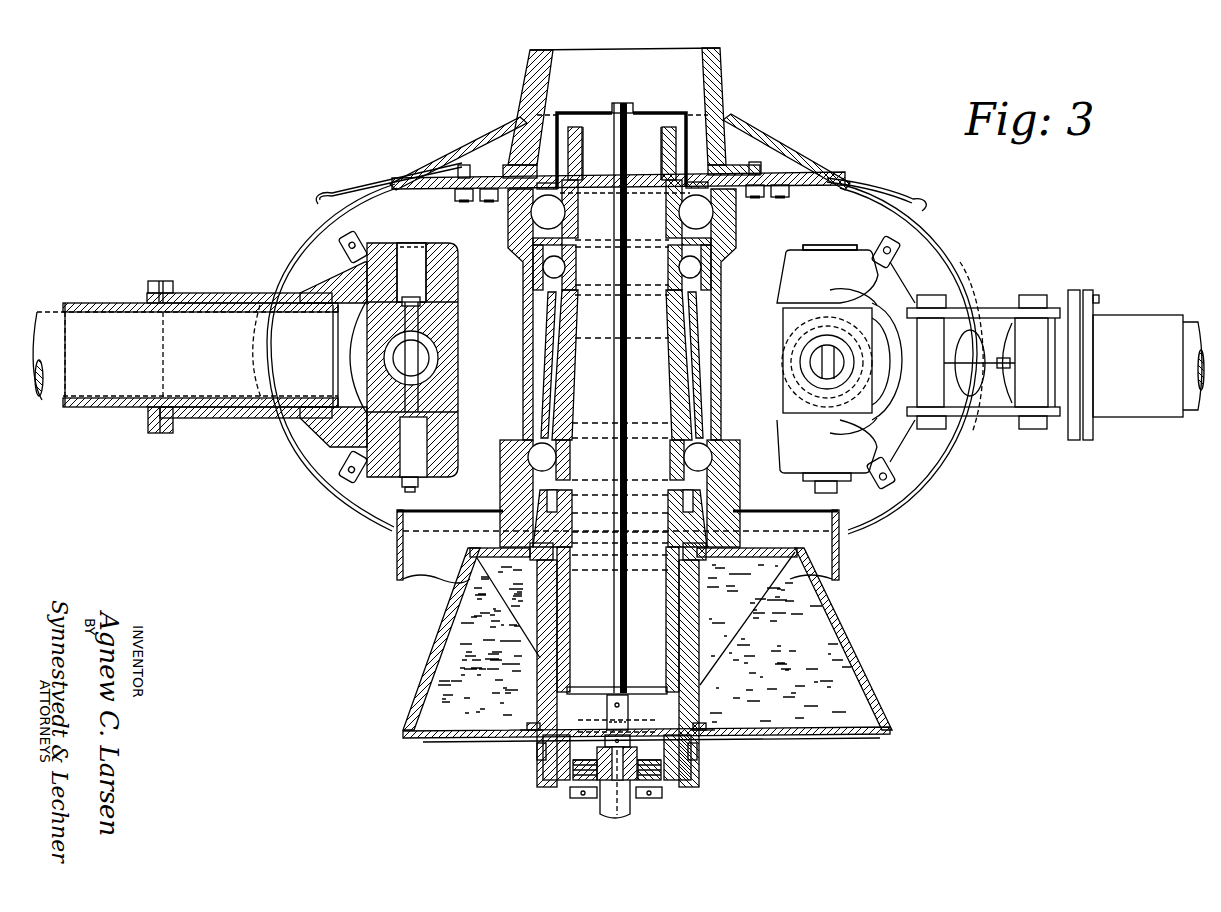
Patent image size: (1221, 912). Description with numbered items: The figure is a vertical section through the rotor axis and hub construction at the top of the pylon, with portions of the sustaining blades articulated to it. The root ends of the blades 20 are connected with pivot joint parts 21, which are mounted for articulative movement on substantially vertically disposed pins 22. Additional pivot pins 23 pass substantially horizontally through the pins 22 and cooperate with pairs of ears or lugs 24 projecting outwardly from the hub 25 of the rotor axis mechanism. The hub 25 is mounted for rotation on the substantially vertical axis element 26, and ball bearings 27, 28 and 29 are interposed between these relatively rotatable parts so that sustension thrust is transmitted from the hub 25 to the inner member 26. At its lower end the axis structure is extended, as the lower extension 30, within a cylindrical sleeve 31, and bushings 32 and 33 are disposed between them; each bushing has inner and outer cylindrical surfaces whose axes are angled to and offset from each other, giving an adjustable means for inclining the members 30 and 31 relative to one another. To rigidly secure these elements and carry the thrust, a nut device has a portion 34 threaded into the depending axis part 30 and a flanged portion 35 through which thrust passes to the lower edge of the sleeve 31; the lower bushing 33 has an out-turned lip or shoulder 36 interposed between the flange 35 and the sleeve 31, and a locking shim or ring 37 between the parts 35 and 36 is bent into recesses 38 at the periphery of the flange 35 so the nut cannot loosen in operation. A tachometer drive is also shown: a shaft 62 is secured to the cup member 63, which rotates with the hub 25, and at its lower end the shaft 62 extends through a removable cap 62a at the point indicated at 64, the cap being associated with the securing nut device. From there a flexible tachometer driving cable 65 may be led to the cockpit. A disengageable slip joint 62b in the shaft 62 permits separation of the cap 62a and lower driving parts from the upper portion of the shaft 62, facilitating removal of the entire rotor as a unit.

The root ends of the blades 20 is at (52, 382).
The pivot joint parts 21 is at (330, 433).
The pins 22 is at (390, 242).
The pivot pins 23 is at (428, 366).
The ears or lugs 24 is at (623, 361).
The hub 25 is at (523, 281).
The axis element 26 is at (578, 350).
The ball bearing 27 is at (545, 211).
The ball bearing 28 is at (553, 266).
The ball bearing 29 is at (535, 457).
The lower extension of the axis 30 is at (667, 607).
The cylindrical sleeve 31 is at (690, 608).
The bushing 32 is at (558, 562).
The bushing 33 is at (690, 738).
The threaded portion of the nut device 34 is at (573, 738).
The flanged portion 35 is at (690, 780).
The out-turned lip or shoulder 36 is at (692, 757).
The locking shim or ring 37 is at (545, 763).
The recesses 38 is at (545, 777).
The shaft 62 is at (617, 145).
The removable cap 62a is at (630, 797).
The disengageable slip joint 62b is at (612, 753).
The cup member 63 is at (657, 118).
The extension of shaft through cap 64 is at (620, 757).
The flexible tachometer driving cable 65 is at (623, 800).